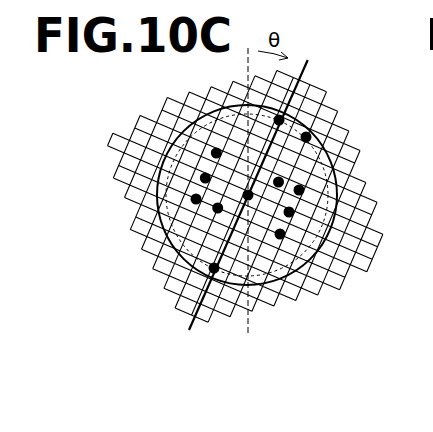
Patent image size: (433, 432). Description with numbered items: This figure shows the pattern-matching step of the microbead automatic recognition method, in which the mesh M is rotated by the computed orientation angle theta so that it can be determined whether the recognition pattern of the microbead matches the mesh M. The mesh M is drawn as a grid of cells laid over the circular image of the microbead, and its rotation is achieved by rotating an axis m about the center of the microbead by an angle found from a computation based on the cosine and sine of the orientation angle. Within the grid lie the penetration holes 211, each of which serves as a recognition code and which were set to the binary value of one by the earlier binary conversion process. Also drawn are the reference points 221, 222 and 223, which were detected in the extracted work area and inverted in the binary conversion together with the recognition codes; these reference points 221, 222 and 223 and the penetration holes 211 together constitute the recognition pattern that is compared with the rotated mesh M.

The mesh M is at (318, 298).
The axis m is at (186, 325).
The penetration hole 211 is at (305, 190).
The reference point 221 is at (207, 272).
The reference point 222 is at (310, 134).
The reference point 223 is at (284, 115).